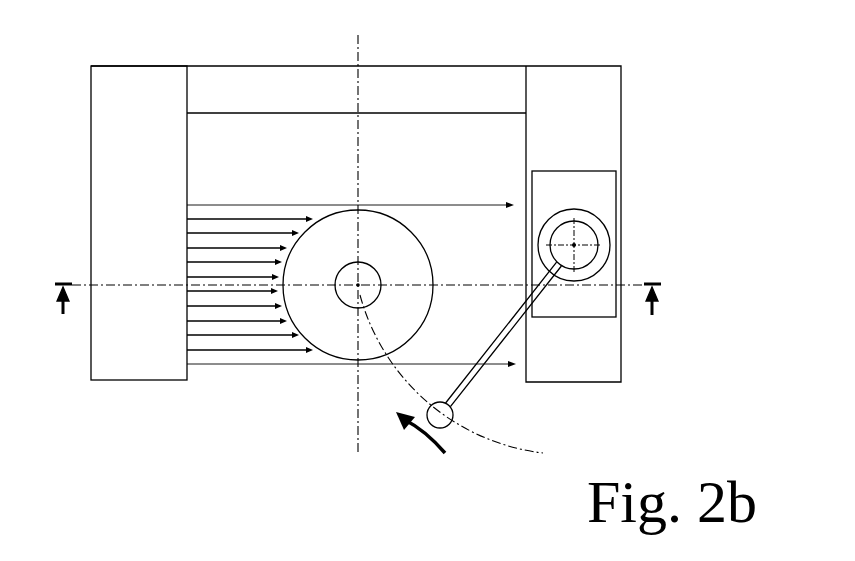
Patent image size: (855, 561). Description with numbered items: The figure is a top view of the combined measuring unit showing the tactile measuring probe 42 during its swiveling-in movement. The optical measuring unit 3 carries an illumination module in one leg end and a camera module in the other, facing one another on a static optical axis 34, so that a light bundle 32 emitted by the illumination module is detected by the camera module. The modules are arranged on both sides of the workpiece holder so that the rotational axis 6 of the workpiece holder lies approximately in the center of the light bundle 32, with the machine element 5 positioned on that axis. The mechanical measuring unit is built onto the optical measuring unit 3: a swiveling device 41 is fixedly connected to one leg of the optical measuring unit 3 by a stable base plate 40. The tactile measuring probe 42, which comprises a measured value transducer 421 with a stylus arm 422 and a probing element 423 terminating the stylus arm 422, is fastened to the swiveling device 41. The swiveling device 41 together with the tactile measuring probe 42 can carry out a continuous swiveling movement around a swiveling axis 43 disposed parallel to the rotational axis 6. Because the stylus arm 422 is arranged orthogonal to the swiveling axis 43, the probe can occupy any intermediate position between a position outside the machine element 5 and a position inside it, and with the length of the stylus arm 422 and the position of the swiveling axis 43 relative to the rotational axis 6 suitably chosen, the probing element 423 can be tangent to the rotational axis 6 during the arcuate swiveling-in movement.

The optical measuring unit 3 is at (578, 120).
The static optical axis 34 is at (140, 285).
The light bundle 32 is at (244, 382).
The machine element 5 is at (347, 340).
The rotational axis 6 is at (358, 285).
The base plate 40 is at (605, 183).
The swiveling device 41 is at (590, 220).
The swiveling axis 43 is at (574, 245).
The tactile measuring probe 42 is at (583, 336).
The measured value transducer 421 is at (583, 258).
The stylus arm 422 is at (517, 325).
The probing element 423 is at (452, 407).